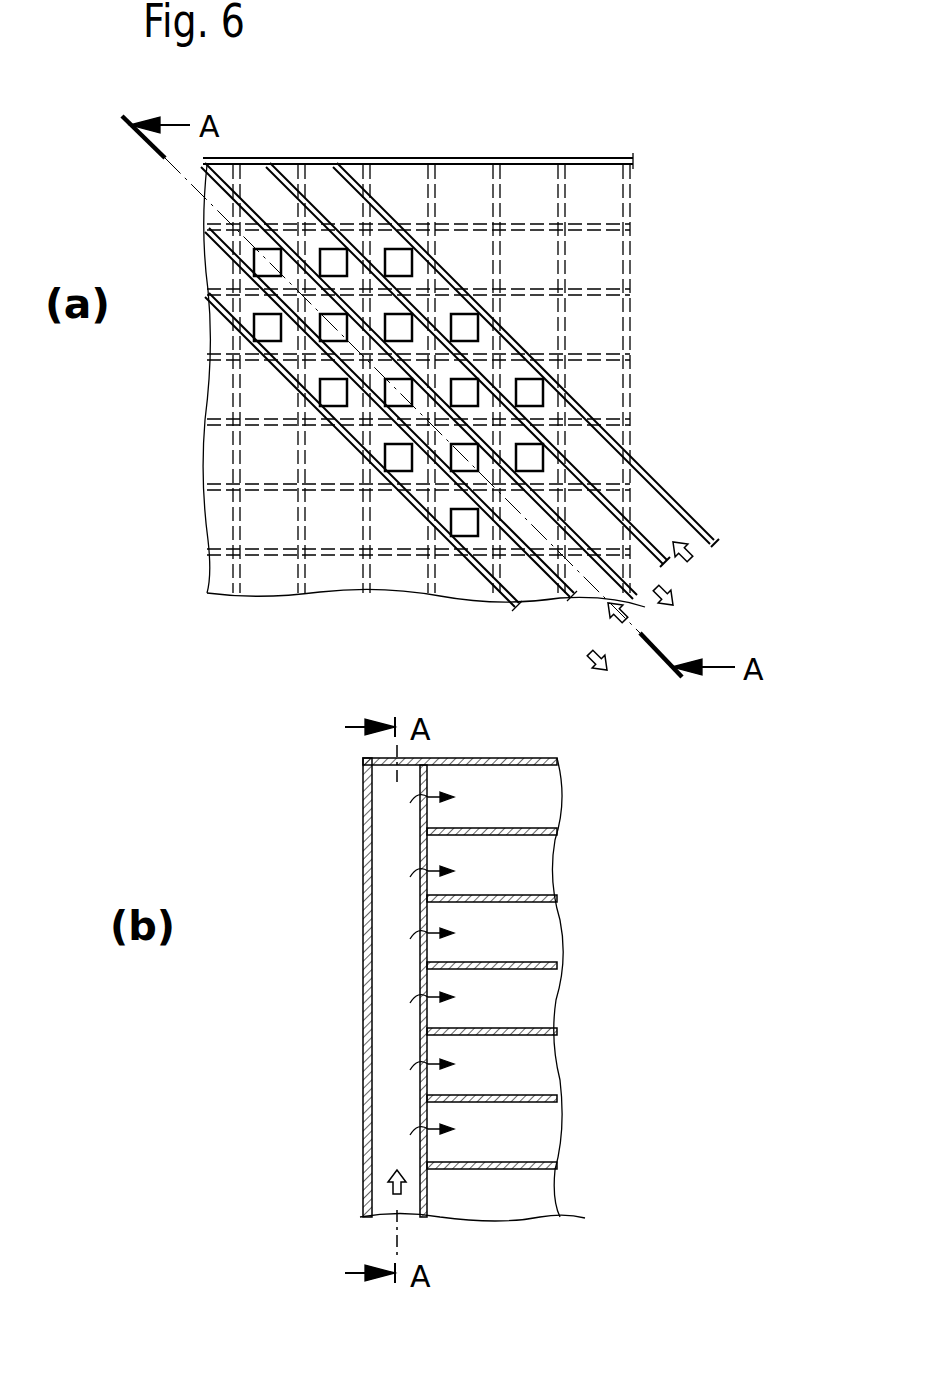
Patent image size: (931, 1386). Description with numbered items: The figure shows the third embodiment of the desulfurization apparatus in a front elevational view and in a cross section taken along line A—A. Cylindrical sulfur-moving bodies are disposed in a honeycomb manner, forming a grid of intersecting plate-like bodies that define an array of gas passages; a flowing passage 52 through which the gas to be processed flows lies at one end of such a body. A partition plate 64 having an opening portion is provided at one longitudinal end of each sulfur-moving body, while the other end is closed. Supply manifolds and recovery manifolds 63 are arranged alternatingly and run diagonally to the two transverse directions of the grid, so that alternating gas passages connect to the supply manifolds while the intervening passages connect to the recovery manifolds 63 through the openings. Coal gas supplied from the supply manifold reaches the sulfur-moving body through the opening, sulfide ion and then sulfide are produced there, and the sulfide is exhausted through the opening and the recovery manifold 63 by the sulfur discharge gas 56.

The flowing passage 52 is at (380, 835).
The sulfur discharge gas 56 is at (678, 600).
The recovery manifold 63 is at (566, 602).
The partition plate 64 is at (420, 968).